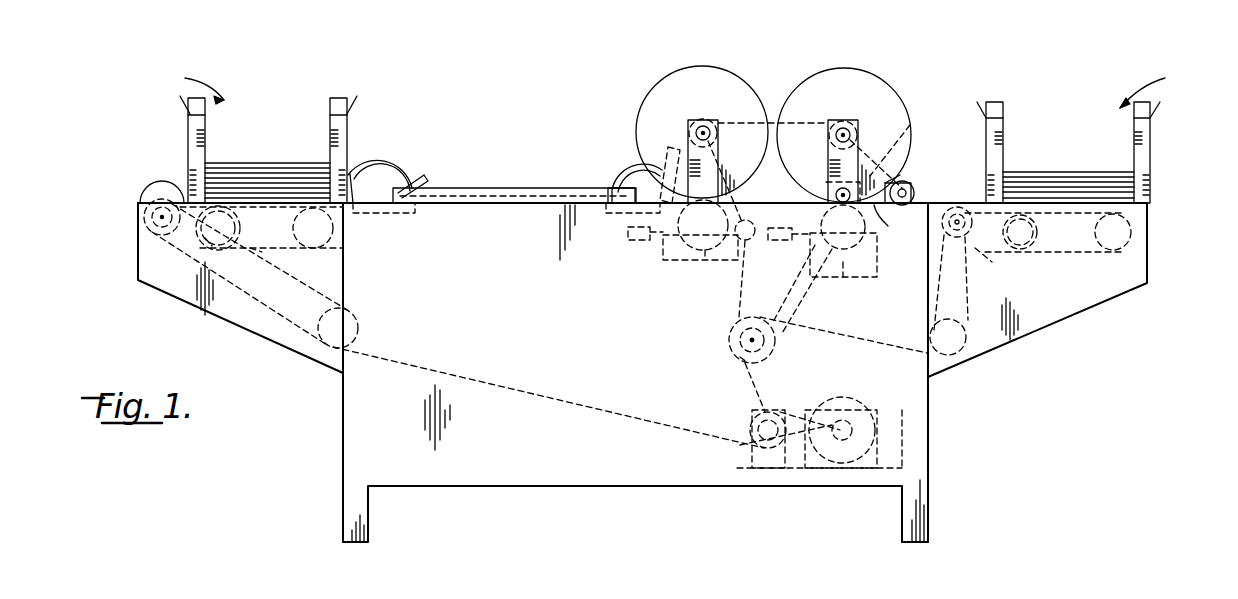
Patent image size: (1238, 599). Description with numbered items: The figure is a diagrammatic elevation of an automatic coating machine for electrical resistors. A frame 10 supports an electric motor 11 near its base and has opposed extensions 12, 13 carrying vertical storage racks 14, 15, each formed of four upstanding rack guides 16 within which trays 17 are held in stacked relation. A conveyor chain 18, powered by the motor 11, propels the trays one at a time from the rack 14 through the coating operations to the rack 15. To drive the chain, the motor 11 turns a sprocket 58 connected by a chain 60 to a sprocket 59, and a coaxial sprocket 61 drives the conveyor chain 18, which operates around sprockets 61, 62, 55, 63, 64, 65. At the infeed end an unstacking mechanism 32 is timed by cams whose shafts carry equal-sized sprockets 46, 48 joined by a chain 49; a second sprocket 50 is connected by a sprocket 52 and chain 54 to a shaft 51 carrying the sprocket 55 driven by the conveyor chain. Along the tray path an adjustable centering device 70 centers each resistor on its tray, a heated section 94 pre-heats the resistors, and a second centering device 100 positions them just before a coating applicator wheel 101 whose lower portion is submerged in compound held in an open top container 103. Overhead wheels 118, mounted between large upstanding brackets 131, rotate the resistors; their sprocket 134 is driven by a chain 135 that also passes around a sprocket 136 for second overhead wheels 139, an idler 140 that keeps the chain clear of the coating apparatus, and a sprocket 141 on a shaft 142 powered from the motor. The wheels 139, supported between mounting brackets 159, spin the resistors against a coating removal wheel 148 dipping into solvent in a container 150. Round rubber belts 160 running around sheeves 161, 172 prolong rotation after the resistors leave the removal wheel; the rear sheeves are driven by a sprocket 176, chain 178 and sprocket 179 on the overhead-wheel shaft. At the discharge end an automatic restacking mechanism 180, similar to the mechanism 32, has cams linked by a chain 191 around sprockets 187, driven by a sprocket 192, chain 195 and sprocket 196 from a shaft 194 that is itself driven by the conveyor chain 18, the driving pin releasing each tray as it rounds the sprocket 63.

The frame 10 is at (333, 436).
The electric motor 11 is at (838, 470).
The frame extension 12 is at (166, 293).
The frame extension 13 is at (1110, 300).
The vertical storage rack 14 is at (186, 85).
The vertical storage rack 15 is at (1160, 86).
The rack guides 16 is at (188, 142).
The trays 17 is at (272, 165).
The conveyor chain 18 is at (253, 312).
The unstacking mechanism 32 is at (290, 252).
The sprocket 46 is at (206, 240).
The sprocket 48 is at (334, 243).
The chain 49 is at (258, 251).
The second sprocket 50 is at (243, 228).
The shaft 51 is at (162, 217).
The sprocket 52 is at (144, 216).
The chain 54 is at (181, 250).
The sprocket 55 is at (158, 198).
The sprocket 58 is at (842, 430).
The sprocket 59 is at (750, 424).
The chain 60 is at (812, 402).
The sprocket 61 is at (752, 440).
The sprocket 62 is at (360, 318).
The sprocket 63 is at (958, 256).
The sprocket 64 is at (930, 320).
The sprocket 65 is at (736, 340).
The adjustable centering device 70 is at (402, 160).
The heated section 94 is at (480, 185).
The second centering device 100 is at (626, 172).
The coating applicator wheel 101 is at (705, 262).
The open top container 103 is at (657, 242).
The overhead wheels 118 is at (656, 96).
The upstanding brackets 131 is at (737, 150).
The sprocket 134 is at (700, 121).
The chain 135 is at (754, 115).
The sprocket 136 is at (830, 141).
The overhead wheels 139 is at (902, 94).
The idler 140 is at (760, 248).
The sprocket 141 is at (740, 357).
The shaft 142 is at (752, 340).
The coating removal wheel 148 is at (833, 278).
The open top container 150 is at (848, 285).
The mounting brackets 159 is at (874, 148).
The round rubber belts 160 is at (898, 222).
The sheeves 161 is at (835, 172).
The rear sheeves 172 is at (912, 192).
The sprocket 176 is at (896, 182).
The chain 178 is at (908, 130).
The sprocket 179 is at (842, 120).
The automatic restacking mechanism 180 is at (1058, 272).
The sprocket 187 is at (1040, 233).
The chain 191 is at (1088, 254).
The sprocket 192 is at (1060, 256).
The shaft 194 is at (955, 224).
The chain 195 is at (1005, 257).
The sprocket 196 is at (930, 258).